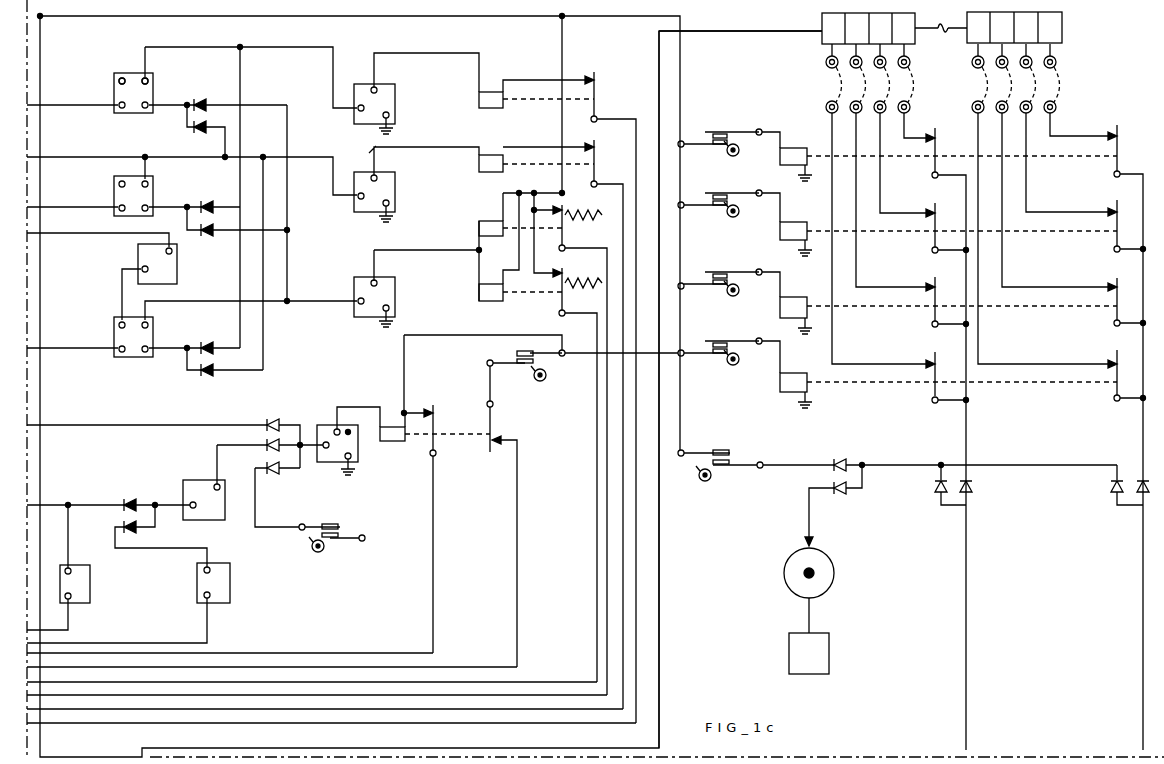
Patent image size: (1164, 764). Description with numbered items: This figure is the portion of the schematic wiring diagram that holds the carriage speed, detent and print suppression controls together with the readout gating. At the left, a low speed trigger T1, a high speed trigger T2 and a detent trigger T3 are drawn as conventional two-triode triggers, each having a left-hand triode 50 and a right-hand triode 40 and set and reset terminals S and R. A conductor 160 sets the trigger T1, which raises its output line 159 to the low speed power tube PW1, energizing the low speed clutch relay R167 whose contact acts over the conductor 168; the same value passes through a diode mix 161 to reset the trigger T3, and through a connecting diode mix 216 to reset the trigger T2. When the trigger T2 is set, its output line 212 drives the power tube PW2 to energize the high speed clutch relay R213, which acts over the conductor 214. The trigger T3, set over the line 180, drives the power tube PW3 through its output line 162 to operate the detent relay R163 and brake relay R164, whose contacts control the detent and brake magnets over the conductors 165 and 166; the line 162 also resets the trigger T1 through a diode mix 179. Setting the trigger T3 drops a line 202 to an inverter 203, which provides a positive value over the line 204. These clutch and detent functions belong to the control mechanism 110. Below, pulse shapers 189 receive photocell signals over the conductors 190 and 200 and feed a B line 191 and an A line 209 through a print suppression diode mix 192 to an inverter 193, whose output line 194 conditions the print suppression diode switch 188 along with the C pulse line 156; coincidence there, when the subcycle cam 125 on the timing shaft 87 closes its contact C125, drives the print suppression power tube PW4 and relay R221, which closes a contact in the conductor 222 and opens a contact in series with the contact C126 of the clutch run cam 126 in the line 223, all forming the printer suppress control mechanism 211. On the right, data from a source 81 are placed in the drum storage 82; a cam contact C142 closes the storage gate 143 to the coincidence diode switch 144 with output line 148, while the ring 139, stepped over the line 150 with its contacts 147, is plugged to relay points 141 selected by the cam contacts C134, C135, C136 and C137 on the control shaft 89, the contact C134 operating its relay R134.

The left-hand triode 50 is at (117, 83).
The right-hand triode 40 is at (150, 92).
The conductor 160 is at (105, 105).
The output line 159 is at (212, 46).
The diode mix 179 is at (198, 110).
The output line 212 is at (145, 160).
The connecting diode mix 216 is at (201, 212).
The line 204 is at (104, 236).
The inverter 203 is at (138, 269).
The line 202 is at (118, 288).
The output line 162 is at (166, 312).
The line 180 is at (104, 348).
The diode mix 161 is at (192, 366).
The C pulse line 156 is at (188, 425).
The print suppression diode switch 188 is at (283, 429).
The output line 194 is at (244, 444).
The inverter 193 is at (202, 484).
The B line conductor 191 is at (104, 506).
The print suppression diode mix 192 is at (158, 494).
The A line 209 is at (182, 546).
The pulse shaper 189 is at (85, 587).
The conductor 190 is at (70, 622).
The conductor 200 is at (204, 631).
The conductor 168 is at (604, 119).
The conductor 214 is at (635, 182).
The control mechanism 110 is at (455, 265).
The conductor 166 is at (586, 254).
The conductor 165 is at (582, 318).
The printer suppress control mechanism 211 is at (366, 393).
The conductor 222 is at (432, 503).
The line 223 is at (516, 500).
The printer clutch run cam 126 is at (532, 376).
The subcycle timing shaft 87 is at (548, 382).
The subcycle cam 125 is at (310, 546).
The line 150 is at (755, 30).
The ring 139 is at (822, 26).
The switch contacts 147 is at (828, 98).
The relay points 141 is at (931, 272).
The storage gate 143 is at (850, 466).
The coincidence diode switch 144 is at (971, 498).
The output line 148 is at (962, 579).
The buffer storage medium 82 is at (785, 576).
The data source 81 is at (788, 656).
The control shaft 89 is at (740, 364).
The low speed trigger T1 is at (133, 100).
The high speed trigger T2 is at (133, 196).
The detent trigger T3 is at (133, 344).
The low speed power tube PW1 is at (374, 109).
The power tube PW2 is at (374, 197).
The power tube PW3 is at (374, 302).
The print suppression power tube PW4 is at (337, 450).
The low speed clutch relay R167 is at (476, 100).
The high speed clutch relay R213 is at (482, 157).
The brake relay R164 is at (494, 224).
The detent relay R163 is at (478, 292).
The print suppression relay R221 is at (386, 443).
The relay R134 is at (785, 156).
The cam contact C134 is at (716, 134).
The cam contact C135 is at (724, 196).
The cam contact C136 is at (719, 274).
The cam contact C137 is at (719, 343).
The storage gate cam contact C142 is at (721, 452).
The cam contact C126 is at (531, 354).
The cam contact C125 is at (332, 528).